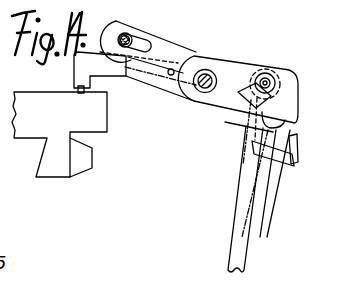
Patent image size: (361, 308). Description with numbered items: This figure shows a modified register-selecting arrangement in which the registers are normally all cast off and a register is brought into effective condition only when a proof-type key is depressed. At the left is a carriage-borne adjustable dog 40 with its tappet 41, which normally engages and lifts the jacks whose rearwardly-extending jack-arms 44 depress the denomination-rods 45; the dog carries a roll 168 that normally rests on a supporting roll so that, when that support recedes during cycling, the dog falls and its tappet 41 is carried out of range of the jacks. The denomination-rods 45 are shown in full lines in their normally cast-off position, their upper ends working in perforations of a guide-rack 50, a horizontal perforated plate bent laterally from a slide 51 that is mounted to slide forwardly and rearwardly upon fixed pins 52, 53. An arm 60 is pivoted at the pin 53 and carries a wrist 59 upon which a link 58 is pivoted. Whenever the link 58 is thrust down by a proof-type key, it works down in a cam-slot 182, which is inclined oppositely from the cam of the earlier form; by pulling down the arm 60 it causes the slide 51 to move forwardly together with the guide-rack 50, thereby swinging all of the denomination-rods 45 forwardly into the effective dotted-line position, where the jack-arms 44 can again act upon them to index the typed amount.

The adjustable dog 40 is at (59, 134).
The tappet 41 is at (86, 90).
The jack-arm 44 is at (304, 122).
The denomination-rod 45 is at (262, 181).
The guide-rack 50 is at (294, 158).
The slide-bar 51 is at (283, 78).
The fixed pin 52 is at (129, 37).
The fixed pin 53 is at (201, 76).
The link 58 is at (242, 175).
The wrist 59 is at (261, 81).
The arm 60 is at (230, 62).
The roll 168 is at (93, 158).
The cam-slot 182 is at (265, 111).